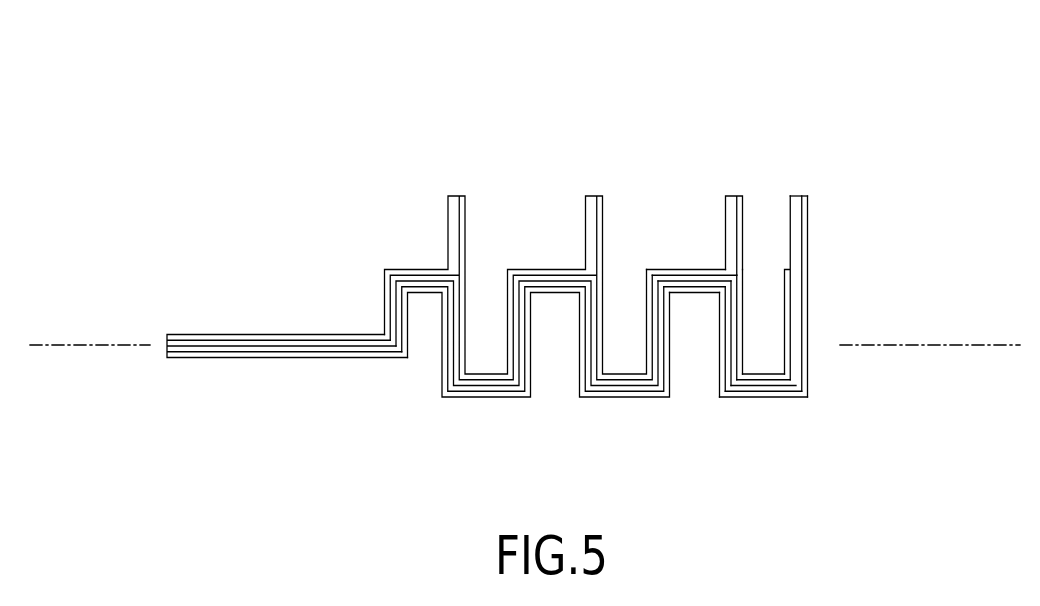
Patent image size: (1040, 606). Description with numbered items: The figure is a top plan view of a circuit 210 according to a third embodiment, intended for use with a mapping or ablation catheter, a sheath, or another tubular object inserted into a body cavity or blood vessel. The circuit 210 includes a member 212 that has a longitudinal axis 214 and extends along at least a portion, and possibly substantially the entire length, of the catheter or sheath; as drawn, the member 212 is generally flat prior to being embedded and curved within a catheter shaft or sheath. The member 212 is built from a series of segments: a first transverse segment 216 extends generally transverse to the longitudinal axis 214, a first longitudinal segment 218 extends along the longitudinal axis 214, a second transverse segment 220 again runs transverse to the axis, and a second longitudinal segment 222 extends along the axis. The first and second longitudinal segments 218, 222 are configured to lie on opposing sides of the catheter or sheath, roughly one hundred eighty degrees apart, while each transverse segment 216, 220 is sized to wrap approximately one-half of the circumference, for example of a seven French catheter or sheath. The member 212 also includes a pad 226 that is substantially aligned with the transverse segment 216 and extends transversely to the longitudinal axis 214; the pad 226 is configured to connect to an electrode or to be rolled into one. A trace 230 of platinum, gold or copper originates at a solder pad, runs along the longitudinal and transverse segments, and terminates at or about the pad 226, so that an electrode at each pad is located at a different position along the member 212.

The circuit 210 is at (315, 100).
The member 212 is at (250, 333).
The longitudinal axis 214 is at (95, 292).
The first transverse segment 216 is at (809, 324).
The first longitudinal segment 218 is at (780, 398).
The second transverse segment 220 is at (721, 331).
The second longitudinal segment 222 is at (670, 268).
The pad 226 is at (802, 194).
The trace 230 is at (803, 254).